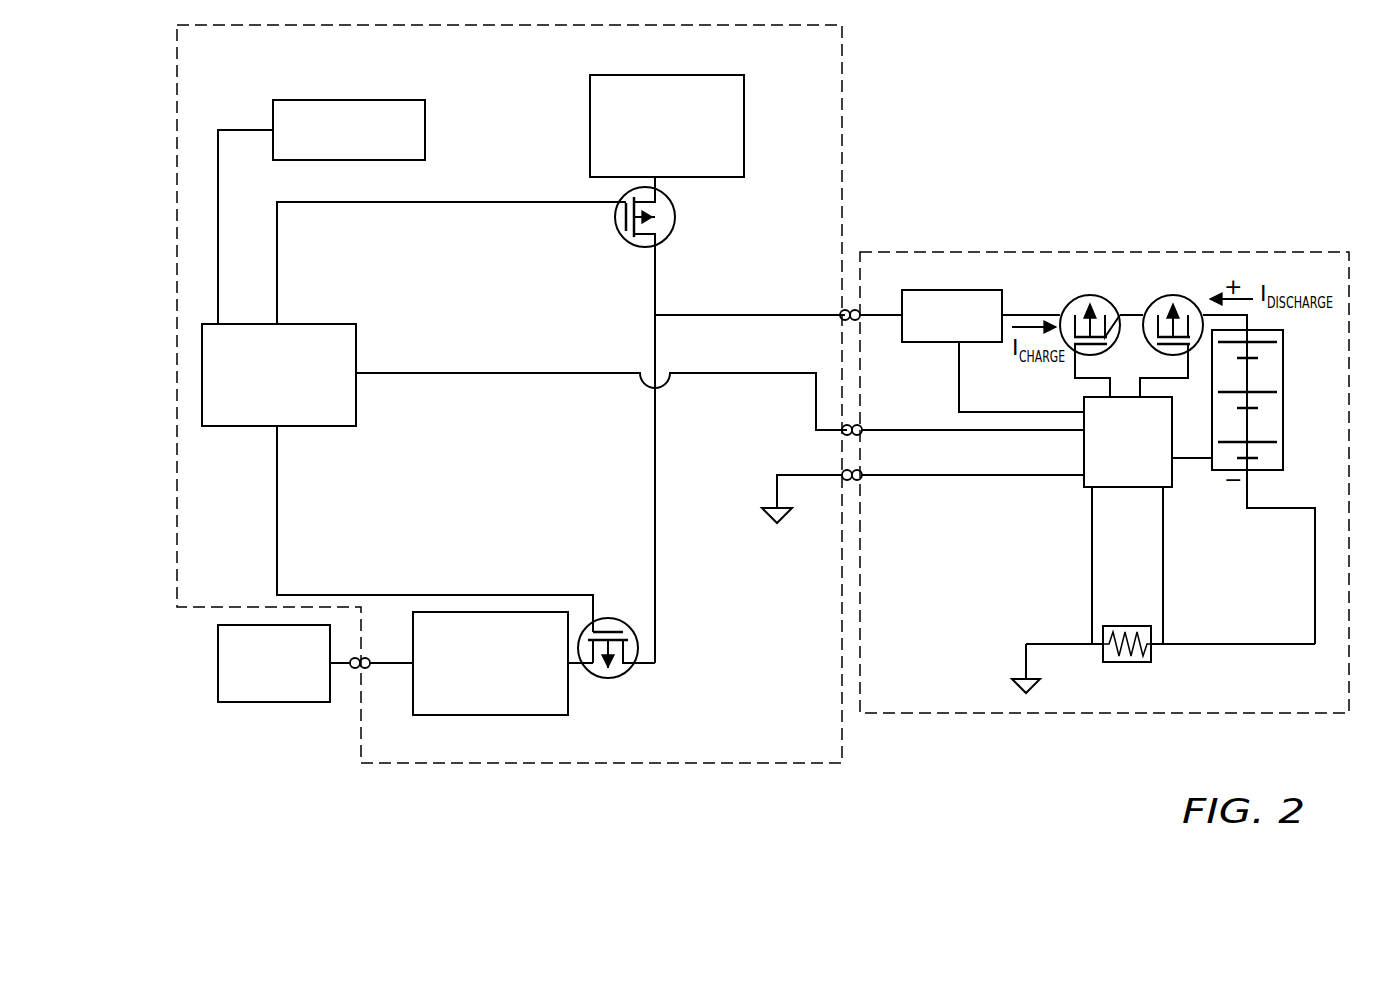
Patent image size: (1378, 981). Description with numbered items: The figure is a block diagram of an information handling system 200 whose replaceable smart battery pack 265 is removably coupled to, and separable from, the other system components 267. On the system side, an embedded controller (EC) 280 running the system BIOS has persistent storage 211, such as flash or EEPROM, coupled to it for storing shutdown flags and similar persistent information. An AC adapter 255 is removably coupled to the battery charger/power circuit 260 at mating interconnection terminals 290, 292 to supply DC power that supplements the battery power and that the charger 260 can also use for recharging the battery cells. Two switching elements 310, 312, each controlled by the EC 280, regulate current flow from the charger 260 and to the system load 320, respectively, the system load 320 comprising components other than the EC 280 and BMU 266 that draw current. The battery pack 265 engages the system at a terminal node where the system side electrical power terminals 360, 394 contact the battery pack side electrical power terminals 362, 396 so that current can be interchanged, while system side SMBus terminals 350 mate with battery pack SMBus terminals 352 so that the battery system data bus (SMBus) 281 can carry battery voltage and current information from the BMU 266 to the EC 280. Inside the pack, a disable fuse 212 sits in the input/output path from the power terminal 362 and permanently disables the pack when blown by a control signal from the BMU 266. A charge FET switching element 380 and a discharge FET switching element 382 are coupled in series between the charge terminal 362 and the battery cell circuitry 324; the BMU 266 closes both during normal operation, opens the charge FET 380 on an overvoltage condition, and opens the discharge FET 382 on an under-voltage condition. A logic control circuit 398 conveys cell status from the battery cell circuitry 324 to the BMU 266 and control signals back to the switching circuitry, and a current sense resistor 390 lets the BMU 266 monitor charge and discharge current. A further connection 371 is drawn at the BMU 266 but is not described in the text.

The information handling system 200 is at (1068, 50).
The persistent storage 211 is at (373, 100).
The disable fuse 212 is at (940, 290).
The AC adapter 255 is at (238, 702).
The battery charger/power circuit 260 is at (493, 715).
The smart battery pack 265 is at (1262, 252).
The battery management unit (BMU) 266 is at (1173, 440).
The other system components 267 is at (842, 122).
The embedded controller (EC) 280 is at (323, 427).
The battery system data bus (SMBus) 281 is at (466, 372).
The mating interconnection terminal 290 is at (352, 656).
The mating interconnection terminal 292 is at (368, 656).
The switching element 310 is at (618, 678).
The switching element 312 is at (622, 240).
The system load 320 is at (590, 100).
The battery cell circuitry 324 is at (1273, 470).
The system side SMBus terminal 350 is at (844, 436).
The SMBus terminal 352 is at (860, 436).
The system side electrical power terminal 360 is at (842, 313).
The battery pack side electrical power terminal 362 is at (856, 311).
The BMU ground line 371 is at (1075, 480).
The charge FET switching element 380 is at (1170, 357).
The discharge FET switching element 382 is at (1087, 357).
The current sense resistor 390 is at (1127, 662).
The system side electrical power terminal 394 is at (844, 481).
The battery pack side electrical power terminal 396 is at (860, 481).
The logic control circuit 398 is at (1195, 462).